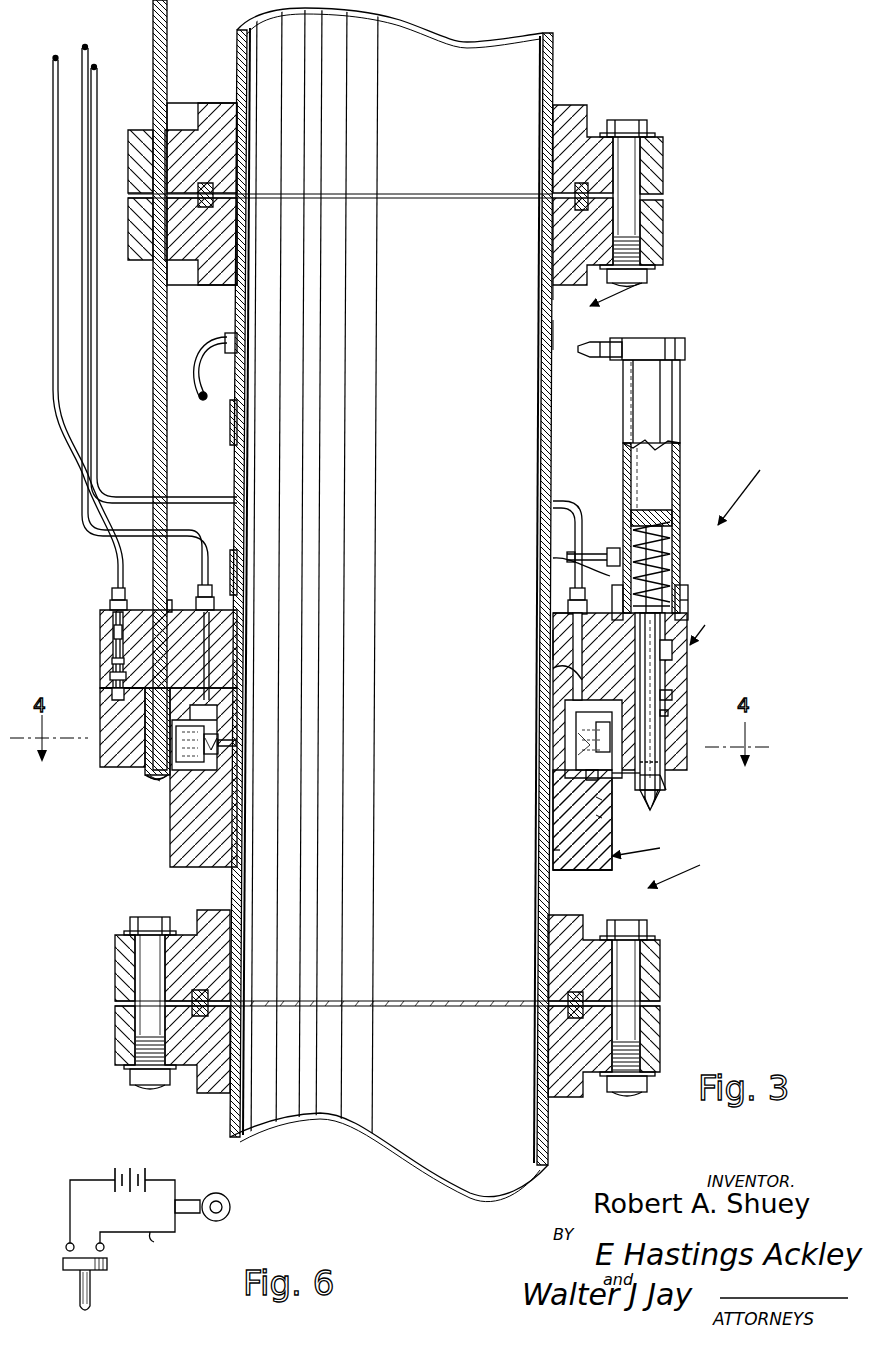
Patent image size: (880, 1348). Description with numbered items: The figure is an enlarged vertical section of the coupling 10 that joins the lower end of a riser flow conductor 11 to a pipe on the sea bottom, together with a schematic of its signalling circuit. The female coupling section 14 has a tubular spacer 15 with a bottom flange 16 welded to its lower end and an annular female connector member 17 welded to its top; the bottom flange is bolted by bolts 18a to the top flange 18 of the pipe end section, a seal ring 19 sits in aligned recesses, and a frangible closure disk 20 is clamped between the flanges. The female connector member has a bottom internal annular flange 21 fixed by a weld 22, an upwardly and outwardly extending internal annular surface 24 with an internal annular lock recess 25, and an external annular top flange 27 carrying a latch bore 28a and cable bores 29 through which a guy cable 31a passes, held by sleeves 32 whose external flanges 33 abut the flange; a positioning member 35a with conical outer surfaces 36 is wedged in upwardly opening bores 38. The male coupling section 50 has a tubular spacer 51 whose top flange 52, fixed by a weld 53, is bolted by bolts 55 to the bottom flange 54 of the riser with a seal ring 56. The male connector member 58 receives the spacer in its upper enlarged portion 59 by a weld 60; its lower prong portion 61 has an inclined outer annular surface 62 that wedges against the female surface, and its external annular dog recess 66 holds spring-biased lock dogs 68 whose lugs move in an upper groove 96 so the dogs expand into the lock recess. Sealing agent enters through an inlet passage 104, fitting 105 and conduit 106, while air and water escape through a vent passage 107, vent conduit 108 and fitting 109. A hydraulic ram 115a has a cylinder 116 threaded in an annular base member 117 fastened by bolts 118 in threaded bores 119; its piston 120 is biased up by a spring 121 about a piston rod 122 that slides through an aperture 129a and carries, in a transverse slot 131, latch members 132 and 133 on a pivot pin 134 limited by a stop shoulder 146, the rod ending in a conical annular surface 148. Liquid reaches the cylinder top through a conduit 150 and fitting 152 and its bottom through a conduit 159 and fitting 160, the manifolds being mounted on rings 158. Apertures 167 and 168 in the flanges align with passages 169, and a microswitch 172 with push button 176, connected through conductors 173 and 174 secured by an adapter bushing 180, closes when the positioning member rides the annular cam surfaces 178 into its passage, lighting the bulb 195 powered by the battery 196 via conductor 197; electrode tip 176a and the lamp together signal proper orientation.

In FIG. 3, the coupling 10 is at (748, 492).
In FIG. 3, the flow conductor 11 is at (553, 58).
In FIG. 3, the female coupling section 14 is at (677, 869).
In FIG. 3, the tubular spacer 15 is at (548, 950).
In FIG. 3, the bottom flange 16 is at (661, 978).
In FIG. 3, the annular female connector member 17 is at (608, 820).
In FIG. 3, the top flange 18 is at (661, 1030).
In FIG. 3, the bolts 18a is at (647, 924).
In FIG. 3, the seal ring 19 is at (568, 1010).
In FIG. 3, the closure disk 20 is at (376, 1000).
In FIG. 3, the bottom internal annular flange 21 is at (552, 850).
In FIG. 3, the weld 22 is at (552, 872).
In FIG. 3, the internal annular surface 24 is at (612, 816).
In FIG. 3, the internal annular lock recess 25 is at (180, 772).
In FIG. 3, the external annular top flange 27 is at (688, 736).
In FIG. 3, the latch bore 28a is at (669, 718).
In FIG. 3, the cable bores 29 is at (148, 770).
In FIG. 3, the guy cable 31a is at (168, 58).
In FIG. 3, the sleeves 32 is at (120, 750).
In FIG. 3, the external flanges 33 is at (147, 776).
In FIG. 3, the positioning member 35a is at (110, 677).
In FIG. 3, the conical outer surfaces 36 is at (112, 662).
In FIG. 3, the upwardly opening bores 38 is at (112, 689).
In FIG. 3, the male coupling section 50 is at (645, 283).
In FIG. 3, the tubular spacer 51 is at (543, 328).
In FIG. 3, the top flange 52 is at (664, 222).
In FIG. 3, the weld 53 is at (551, 288).
In FIG. 3, the bottom flange 54 is at (664, 168).
In FIG. 3, the bolts 55 is at (640, 120).
In FIG. 3, the seal ring 56 is at (575, 205).
In FIG. 3, the male connector member 58 is at (655, 741).
In FIG. 3, the upper enlarged portion 59 is at (552, 640).
In FIG. 3, the weld 60 is at (553, 615).
In FIG. 3, the lower prong portion 61 is at (596, 797).
In FIG. 3, the outer annular surface 62 is at (596, 815).
In FIG. 3, the external annular dog recess 66 is at (220, 768).
In FIG. 3, the lock dogs 68 is at (578, 738).
In FIG. 3, the upper groove 96 is at (576, 720).
In FIG. 3, the inlet passage 104 is at (552, 668).
In FIG. 3, the fitting 105 is at (568, 594).
In FIG. 3, the conduit 106 is at (575, 490).
In FIG. 3, the vent passage 107 is at (212, 638).
In FIG. 3, the vent conduit 108 is at (140, 488).
In FIG. 3, the fitting 109 is at (197, 602).
In FIG. 3, the hydraulic ram 115a is at (681, 470).
In FIG. 3, the cylinder 116 is at (681, 392).
In FIG. 3, the annular base member 117 is at (688, 606).
In FIG. 3, the bolts 118 is at (680, 594).
In FIG. 3, the threaded bores 119 is at (688, 622).
In FIG. 3, the piston 120 is at (668, 510).
In FIG. 3, the spring 121 is at (630, 548).
In FIG. 3, the piston rod 122 is at (661, 672).
In FIG. 3, the aperture 129a is at (673, 705).
In FIG. 3, the transverse slot 131 is at (661, 764).
In FIG. 3, the latch member 132 is at (662, 782).
In FIG. 3, the latch member 133 is at (586, 775).
In FIG. 3, the pivot pin 134 is at (658, 793).
In FIG. 3, the stop shoulder 146 is at (662, 774).
In FIG. 3, the conical annular surface 148 is at (648, 806).
In FIG. 3, the conduit 150 is at (586, 354).
In FIG. 3, the fitting 152 is at (632, 342).
In FIG. 3, the rings 158 is at (229, 436).
In FIG. 3, the conduit 159 is at (553, 556).
In FIG. 3, the fitting 160 is at (566, 556).
In FIG. 3, the apertures 167 is at (165, 262).
In FIG. 3, the apertures 168 is at (165, 128).
In FIG. 3, the passages 169 is at (157, 608).
In FIG. 6, the microswitch 172 is at (108, 1266).
In FIG. 3, the conductor 173 is at (84, 48).
In FIG. 6, the conductor 173 is at (152, 1240).
In FIG. 3, the conductor 174 is at (55, 55).
In FIG. 6, the conductor 174 is at (70, 1205).
In FIG. 3, the push button 176 is at (113, 652).
In FIG. 6, the push button 176 is at (90, 1298).
In FIG. 3, the electrode tip 176a is at (114, 631).
In FIG. 3, the annular cam surfaces 178 is at (114, 697).
In FIG. 3, the adapter bushing 180 is at (113, 600).
In FIG. 6, the bulb 195 is at (231, 1212).
In FIG. 6, the battery 196 is at (148, 1172).
In FIG. 6, the conductor 197 is at (176, 1182).